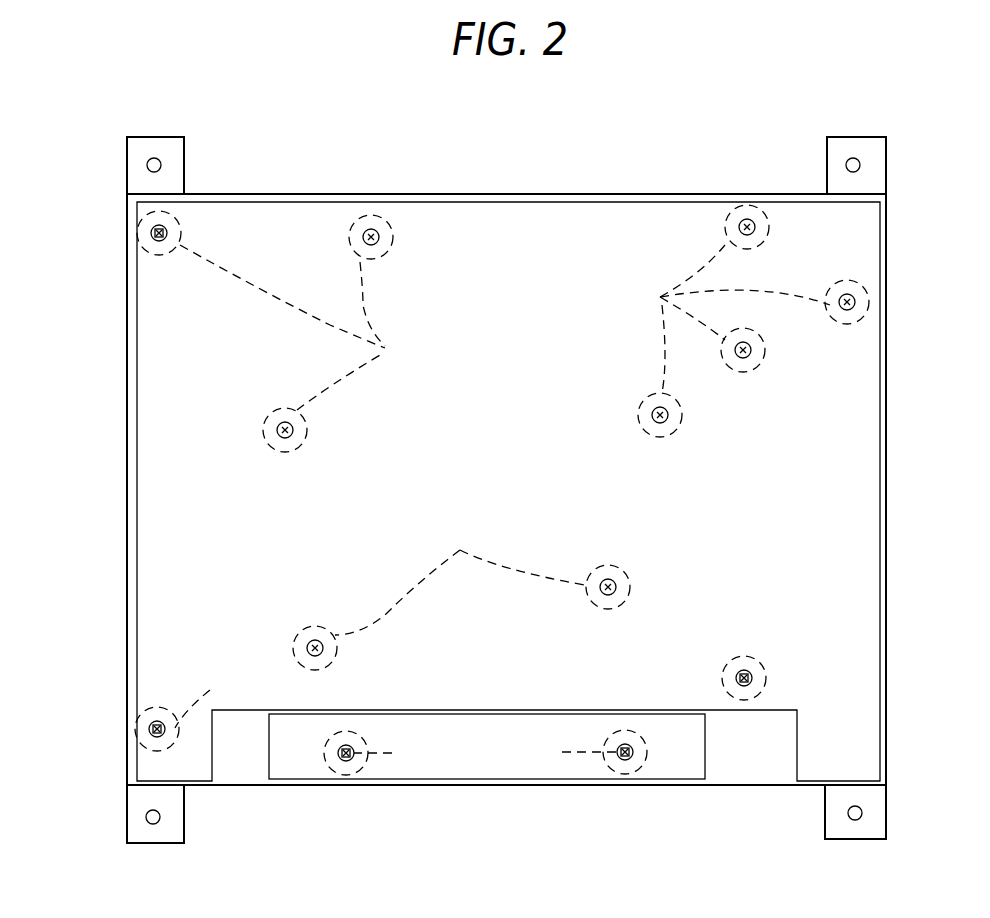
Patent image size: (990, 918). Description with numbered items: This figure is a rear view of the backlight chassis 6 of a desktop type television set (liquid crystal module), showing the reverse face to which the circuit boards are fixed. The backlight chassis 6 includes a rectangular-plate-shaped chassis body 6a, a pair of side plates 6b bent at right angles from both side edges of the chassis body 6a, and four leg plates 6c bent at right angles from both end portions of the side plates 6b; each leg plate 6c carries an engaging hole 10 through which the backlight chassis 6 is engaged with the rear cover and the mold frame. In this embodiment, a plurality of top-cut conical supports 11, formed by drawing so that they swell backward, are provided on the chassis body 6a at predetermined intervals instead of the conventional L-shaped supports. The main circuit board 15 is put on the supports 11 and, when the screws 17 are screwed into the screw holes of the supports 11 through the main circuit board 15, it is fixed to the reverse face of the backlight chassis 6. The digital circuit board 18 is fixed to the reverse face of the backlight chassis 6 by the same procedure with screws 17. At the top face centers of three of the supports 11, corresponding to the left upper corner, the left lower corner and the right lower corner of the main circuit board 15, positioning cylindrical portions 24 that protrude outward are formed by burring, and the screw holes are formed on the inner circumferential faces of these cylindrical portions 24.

The backlight chassis 6 is at (890, 447).
The chassis body 6a is at (888, 607).
The side plates 6b is at (566, 194).
The leg plates 6c is at (127, 171).
The engaging holes 10 is at (161, 165).
The top-cut conical supports 11 is at (387, 348).
The main circuit board 15 is at (490, 250).
The screws 17 is at (151, 233).
The digital circuit board 18 is at (448, 779).
The positioning cylindrical portions 24 is at (160, 250).